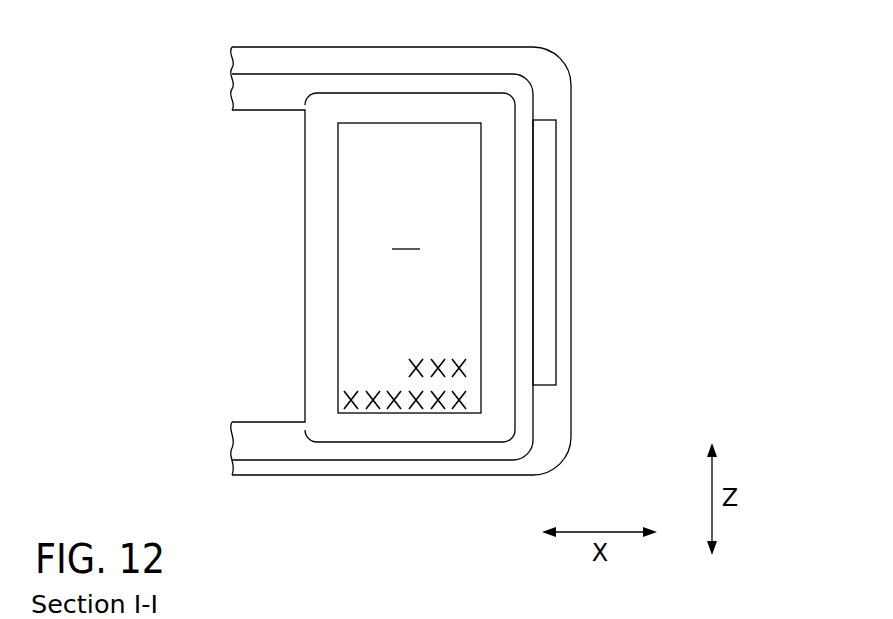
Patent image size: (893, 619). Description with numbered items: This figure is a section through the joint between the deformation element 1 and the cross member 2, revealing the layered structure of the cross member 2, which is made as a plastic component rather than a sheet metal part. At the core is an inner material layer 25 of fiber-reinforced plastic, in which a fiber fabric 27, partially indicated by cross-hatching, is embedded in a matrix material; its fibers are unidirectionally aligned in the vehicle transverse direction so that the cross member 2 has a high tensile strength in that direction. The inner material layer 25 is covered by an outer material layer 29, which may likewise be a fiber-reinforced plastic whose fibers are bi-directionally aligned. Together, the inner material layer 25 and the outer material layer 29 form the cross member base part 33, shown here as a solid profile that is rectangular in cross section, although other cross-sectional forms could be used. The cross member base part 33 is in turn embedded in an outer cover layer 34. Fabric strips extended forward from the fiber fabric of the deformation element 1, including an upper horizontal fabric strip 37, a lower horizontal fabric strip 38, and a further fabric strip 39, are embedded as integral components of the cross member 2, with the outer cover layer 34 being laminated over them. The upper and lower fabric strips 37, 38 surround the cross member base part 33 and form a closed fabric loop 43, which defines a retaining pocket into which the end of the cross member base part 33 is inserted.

The deformation element 1 is at (208, 92).
The cross member 2 is at (604, 138).
The inner material layer 25 is at (365, 295).
The fiber fabric 27 is at (415, 402).
The outer material layer 29 is at (322, 435).
The cross member base part 33 is at (308, 267).
The outer cover layer 34 is at (562, 77).
The upper horizontal fabric strip 37 is at (452, 79).
The lower horizontal fabric strip 38 is at (468, 453).
The fabric strip 39 is at (544, 321).
The fabric loop 43 is at (574, 266).